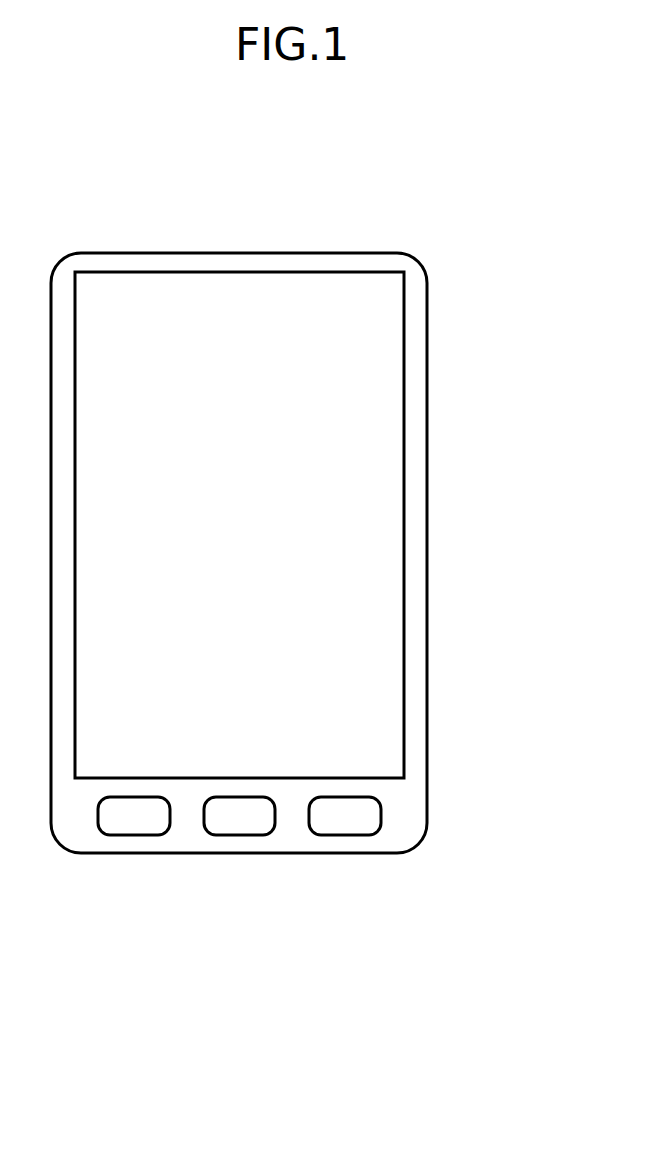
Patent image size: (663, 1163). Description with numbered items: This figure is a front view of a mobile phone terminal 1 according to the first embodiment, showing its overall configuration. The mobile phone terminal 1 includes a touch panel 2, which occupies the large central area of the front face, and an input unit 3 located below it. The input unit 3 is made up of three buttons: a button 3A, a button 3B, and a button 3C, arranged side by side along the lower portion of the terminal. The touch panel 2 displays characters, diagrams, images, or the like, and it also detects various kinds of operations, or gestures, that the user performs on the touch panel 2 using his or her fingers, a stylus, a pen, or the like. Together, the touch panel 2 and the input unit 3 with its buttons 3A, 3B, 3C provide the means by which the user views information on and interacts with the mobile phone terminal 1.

The mobile phone terminal 1 is at (417, 195).
The touch panel 2 is at (332, 494).
The input unit 3 is at (239, 883).
The button 3A is at (135, 835).
The button 3B is at (240, 835).
The button 3C is at (345, 860).